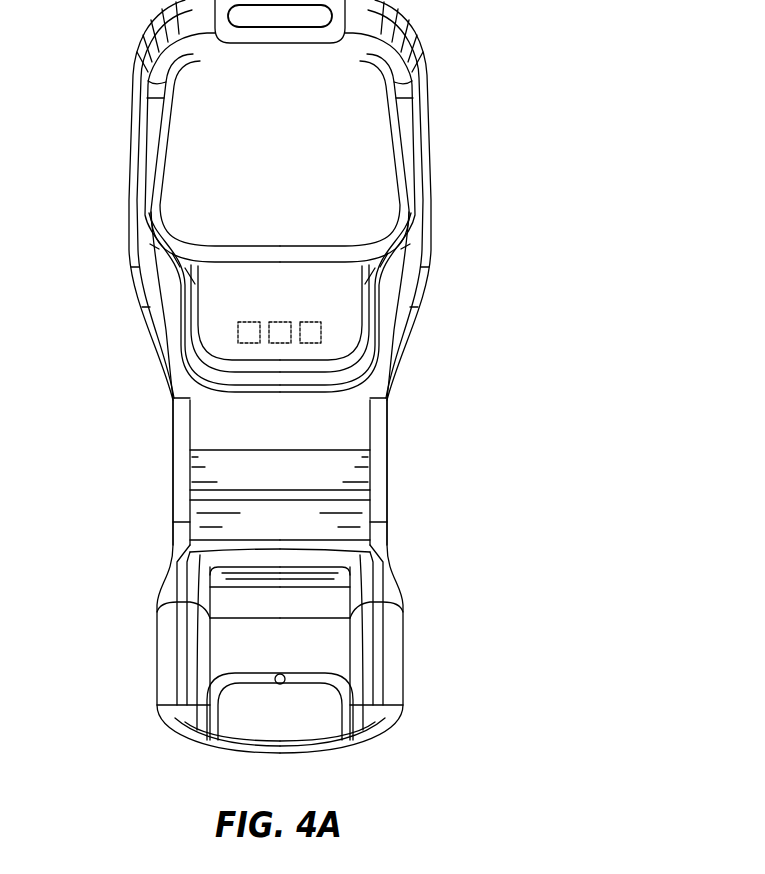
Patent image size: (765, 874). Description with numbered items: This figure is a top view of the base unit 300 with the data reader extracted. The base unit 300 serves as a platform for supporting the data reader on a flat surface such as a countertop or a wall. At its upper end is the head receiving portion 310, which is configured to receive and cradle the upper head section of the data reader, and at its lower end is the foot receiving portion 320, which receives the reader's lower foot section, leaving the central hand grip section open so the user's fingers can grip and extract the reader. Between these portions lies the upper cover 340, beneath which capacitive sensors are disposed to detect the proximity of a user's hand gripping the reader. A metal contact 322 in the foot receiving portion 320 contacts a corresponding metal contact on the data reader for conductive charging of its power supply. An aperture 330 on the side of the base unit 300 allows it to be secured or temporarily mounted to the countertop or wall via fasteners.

The base unit 300 is at (309, 376).
The head receiving portion 310 is at (203, 162).
The upper cover 340 is at (243, 300).
The aperture 330 is at (205, 417).
The foot receiving portion 320 is at (315, 702).
The metal contact 322 is at (276, 677).